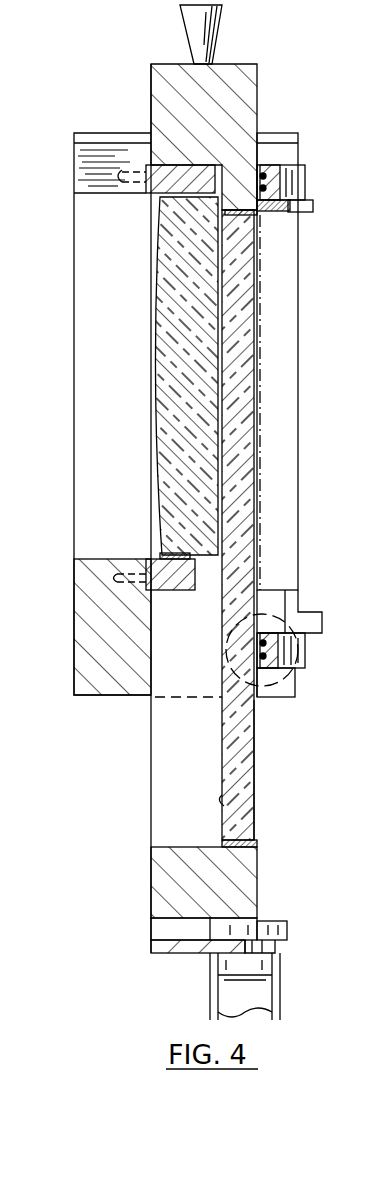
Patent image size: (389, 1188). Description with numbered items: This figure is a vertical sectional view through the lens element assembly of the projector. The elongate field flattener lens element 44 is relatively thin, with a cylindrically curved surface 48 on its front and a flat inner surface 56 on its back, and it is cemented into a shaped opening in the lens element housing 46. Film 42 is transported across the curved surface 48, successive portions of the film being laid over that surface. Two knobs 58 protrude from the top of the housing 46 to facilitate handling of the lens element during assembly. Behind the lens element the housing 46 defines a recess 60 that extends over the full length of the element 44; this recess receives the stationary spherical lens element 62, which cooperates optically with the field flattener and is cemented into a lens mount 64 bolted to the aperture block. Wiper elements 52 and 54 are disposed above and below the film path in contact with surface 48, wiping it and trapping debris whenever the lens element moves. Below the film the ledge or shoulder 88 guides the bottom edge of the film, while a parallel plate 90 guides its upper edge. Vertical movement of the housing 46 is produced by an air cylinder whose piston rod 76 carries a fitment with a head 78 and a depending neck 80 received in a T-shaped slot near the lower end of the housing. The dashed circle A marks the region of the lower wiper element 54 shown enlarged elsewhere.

The film 42 is at (260, 385).
The field flattener lens element 44 is at (250, 542).
The lens element housing 46 is at (258, 868).
The cylindrically curved surface 48 is at (254, 727).
The wiper element 52 is at (311, 164).
The wiper element 54 is at (308, 648).
The flat inner surface 56 is at (228, 797).
The knobs 58 is at (217, 34).
The recess 60 is at (216, 168).
The spherical lens element 62 is at (180, 406).
The lens mount 64 is at (180, 594).
The piston rod 76 is at (208, 986).
The head 78 is at (274, 932).
The depending neck 80 is at (278, 956).
The ledge or shoulder 88 is at (305, 592).
The plate 90 is at (313, 206).
The detail circle A is at (296, 679).